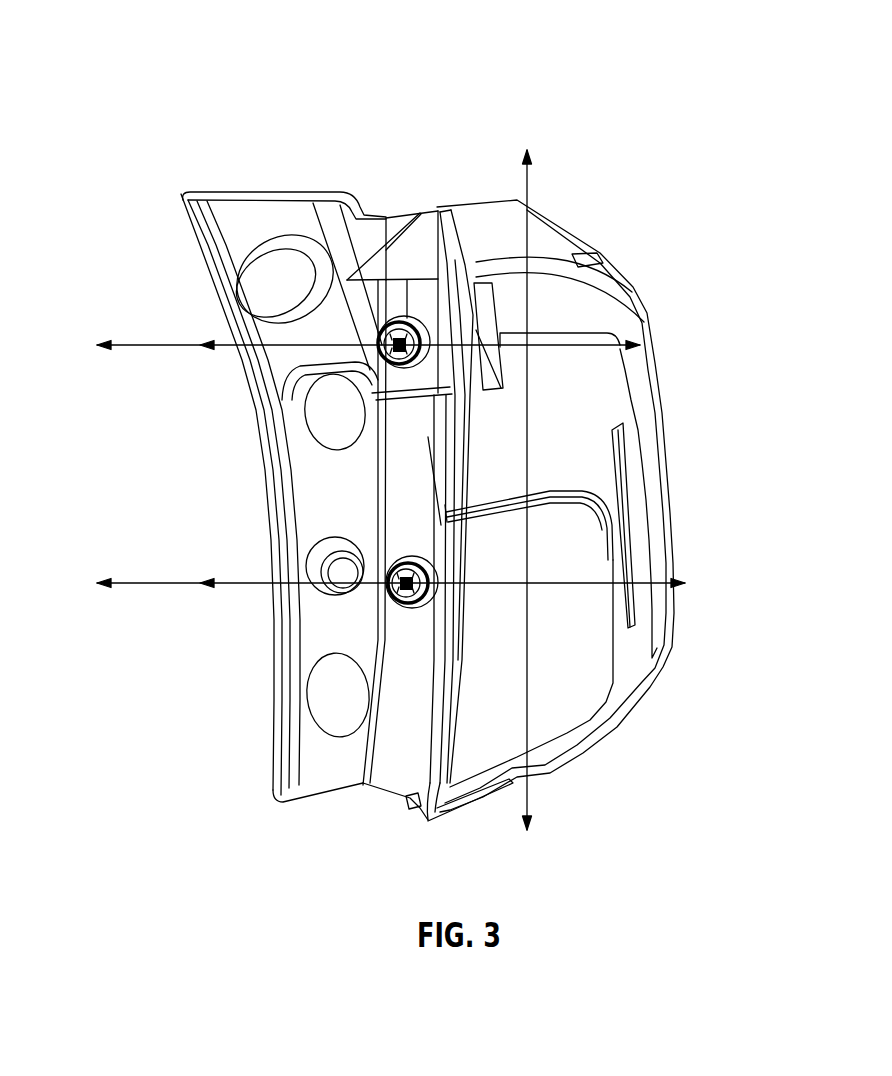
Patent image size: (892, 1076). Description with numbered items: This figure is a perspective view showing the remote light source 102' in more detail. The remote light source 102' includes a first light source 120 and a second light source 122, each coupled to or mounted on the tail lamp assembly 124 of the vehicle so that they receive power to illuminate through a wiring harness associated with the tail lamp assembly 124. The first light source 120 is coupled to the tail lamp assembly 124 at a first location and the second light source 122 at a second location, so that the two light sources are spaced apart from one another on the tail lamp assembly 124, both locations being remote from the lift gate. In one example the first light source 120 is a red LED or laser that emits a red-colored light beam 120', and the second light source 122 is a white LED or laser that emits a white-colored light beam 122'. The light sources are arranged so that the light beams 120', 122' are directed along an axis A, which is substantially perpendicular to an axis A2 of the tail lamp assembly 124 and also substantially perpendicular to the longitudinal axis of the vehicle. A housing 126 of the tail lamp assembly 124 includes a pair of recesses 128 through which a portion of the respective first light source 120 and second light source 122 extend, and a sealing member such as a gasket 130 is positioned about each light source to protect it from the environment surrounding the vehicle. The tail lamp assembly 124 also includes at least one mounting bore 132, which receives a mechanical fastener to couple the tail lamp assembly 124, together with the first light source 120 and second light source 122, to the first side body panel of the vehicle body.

The remote light source 102' is at (694, 23).
The first light source 120 is at (274, 532).
The red-colored light beam 120' is at (368, 363).
The second light source 122 is at (272, 534).
The white-colored light beam 122' is at (391, 602).
The tail lamp assembly 124 is at (670, 374).
The housing 126 is at (433, 836).
The recess 128 is at (424, 320).
The gasket 130 is at (419, 214).
The mounting bore 132 is at (283, 263).
The axis A is at (610, 336).
The axis A2 is at (531, 180).